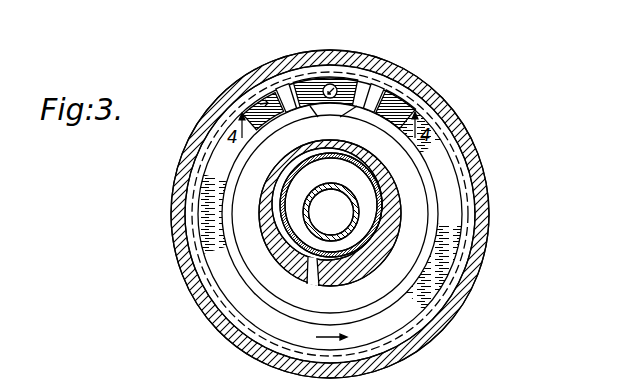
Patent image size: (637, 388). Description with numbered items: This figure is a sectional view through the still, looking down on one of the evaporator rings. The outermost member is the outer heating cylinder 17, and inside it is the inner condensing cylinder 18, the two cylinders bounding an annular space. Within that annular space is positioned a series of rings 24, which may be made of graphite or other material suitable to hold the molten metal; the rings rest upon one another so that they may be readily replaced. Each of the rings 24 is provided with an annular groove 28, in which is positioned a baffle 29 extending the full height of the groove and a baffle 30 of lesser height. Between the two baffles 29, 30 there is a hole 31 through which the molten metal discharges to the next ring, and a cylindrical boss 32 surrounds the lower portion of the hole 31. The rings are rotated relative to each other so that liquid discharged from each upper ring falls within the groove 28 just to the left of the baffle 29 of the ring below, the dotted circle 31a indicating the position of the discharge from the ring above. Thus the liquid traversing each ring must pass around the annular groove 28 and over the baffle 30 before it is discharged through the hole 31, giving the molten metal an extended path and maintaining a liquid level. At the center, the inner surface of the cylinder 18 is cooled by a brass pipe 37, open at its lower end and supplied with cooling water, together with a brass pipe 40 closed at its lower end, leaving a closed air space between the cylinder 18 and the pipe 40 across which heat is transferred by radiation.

The outer heating cylinder 17 is at (480, 262).
The inner condensing cylinder 18 is at (317, 281).
The rings 24 is at (188, 221).
The annular groove 28 is at (449, 189).
The baffle 29 is at (282, 86).
The baffle 30 is at (386, 90).
The hole 31 is at (331, 84).
The dotted circle 31a is at (240, 111).
The cylindrical boss 32 is at (300, 104).
The brass pipe 37 is at (357, 210).
The brass pipe 40 is at (359, 168).